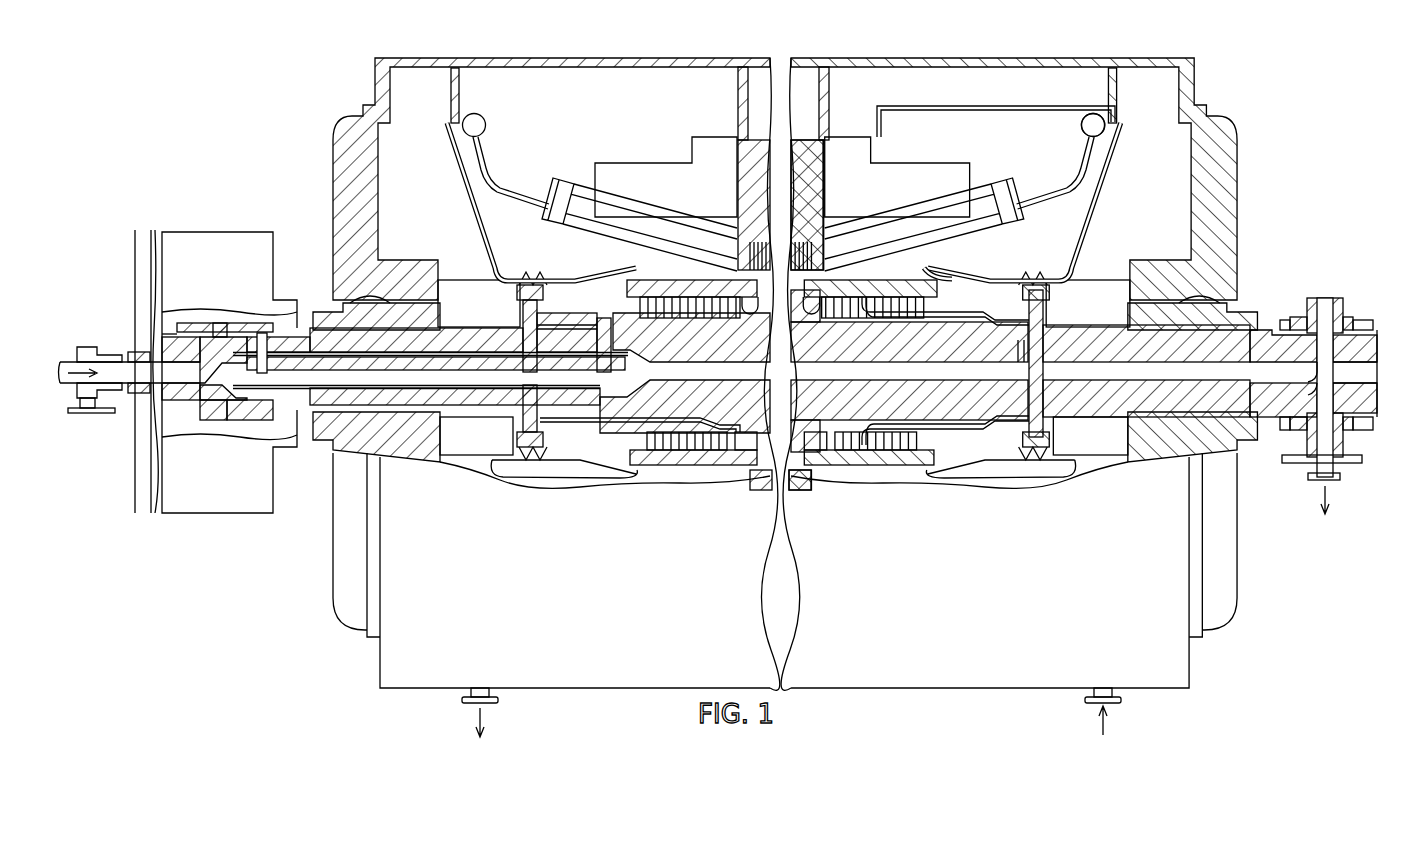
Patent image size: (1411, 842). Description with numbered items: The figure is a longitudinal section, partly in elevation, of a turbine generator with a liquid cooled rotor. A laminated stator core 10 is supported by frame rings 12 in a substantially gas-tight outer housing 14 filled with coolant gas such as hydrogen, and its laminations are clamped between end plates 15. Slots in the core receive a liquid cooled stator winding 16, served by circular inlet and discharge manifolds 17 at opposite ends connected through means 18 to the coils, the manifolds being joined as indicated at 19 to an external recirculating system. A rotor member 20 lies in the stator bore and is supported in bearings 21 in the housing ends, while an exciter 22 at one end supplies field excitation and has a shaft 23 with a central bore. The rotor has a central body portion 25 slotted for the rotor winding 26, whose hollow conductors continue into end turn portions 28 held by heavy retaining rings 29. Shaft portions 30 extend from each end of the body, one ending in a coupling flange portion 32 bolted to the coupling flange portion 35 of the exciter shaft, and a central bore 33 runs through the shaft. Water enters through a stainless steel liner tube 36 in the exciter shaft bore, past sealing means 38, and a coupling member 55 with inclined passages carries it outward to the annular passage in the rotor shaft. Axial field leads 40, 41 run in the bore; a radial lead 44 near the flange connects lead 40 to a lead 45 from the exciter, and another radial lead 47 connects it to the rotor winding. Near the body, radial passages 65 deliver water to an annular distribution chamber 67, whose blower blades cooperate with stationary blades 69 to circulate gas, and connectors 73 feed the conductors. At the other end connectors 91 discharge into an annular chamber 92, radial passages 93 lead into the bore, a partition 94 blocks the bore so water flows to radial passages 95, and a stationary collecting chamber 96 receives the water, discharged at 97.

The stator core 10 is at (808, 142).
The frame rings 12 is at (830, 101).
The outer housing 14 is at (1186, 60).
The end plates 15 is at (714, 136).
The stator winding 16 is at (586, 226).
The inlet and discharge manifolds 17 is at (480, 117).
The connecting means 18 is at (521, 200).
The external recirculating system connection 19 is at (498, 704).
The rotor member 20 is at (852, 281).
The bearings 21 is at (375, 302).
The exciter 22 is at (230, 229).
The exciter shaft 23 is at (134, 352).
The central body portion 25 is at (758, 478).
The rotor winding 26 is at (802, 481).
The end turn portions 28 is at (636, 451).
The retaining rings 29 is at (676, 280).
The shaft portions 30 is at (503, 324).
The coupling flange portion 32 is at (247, 420).
The central bore 33 is at (1357, 378).
The coupling flange portion 35 is at (203, 420).
The liner tube 36 is at (125, 397).
The sealing means 38 is at (92, 347).
The axial lead 40 is at (308, 356).
The axial lead 41 is at (337, 388).
The radial lead 44 is at (257, 333).
The exciter lead 45 is at (170, 325).
The radial lead 47 is at (600, 318).
The coupling member 55 is at (213, 348).
The radial passages 65 is at (525, 404).
The water distribution chamber 67 is at (525, 426).
The stationary blades 69 is at (543, 293).
The connectors 73 is at (592, 436).
The connectors 91 is at (990, 430).
The annular chamber 92 is at (1048, 312).
The radial passages 93 is at (1049, 360).
The partition 94 is at (1018, 360).
The radial passages 95 is at (1306, 375).
The collecting chamber 96 is at (1345, 298).
The discharge 97 is at (1335, 481).